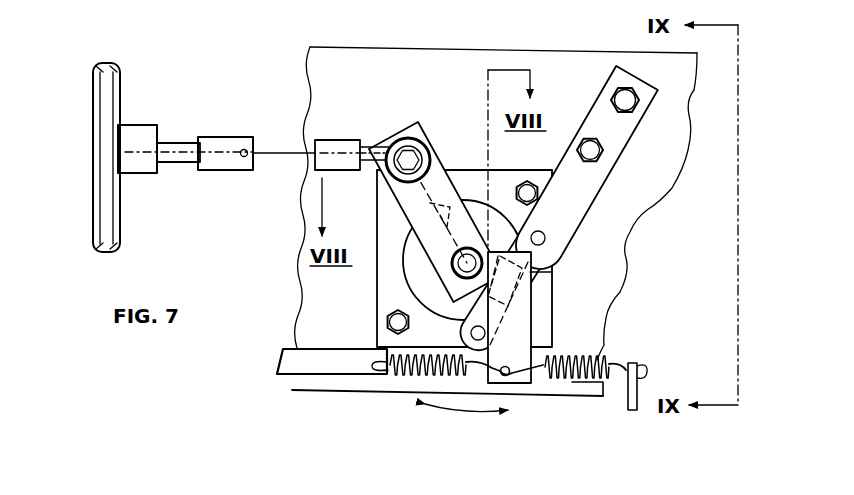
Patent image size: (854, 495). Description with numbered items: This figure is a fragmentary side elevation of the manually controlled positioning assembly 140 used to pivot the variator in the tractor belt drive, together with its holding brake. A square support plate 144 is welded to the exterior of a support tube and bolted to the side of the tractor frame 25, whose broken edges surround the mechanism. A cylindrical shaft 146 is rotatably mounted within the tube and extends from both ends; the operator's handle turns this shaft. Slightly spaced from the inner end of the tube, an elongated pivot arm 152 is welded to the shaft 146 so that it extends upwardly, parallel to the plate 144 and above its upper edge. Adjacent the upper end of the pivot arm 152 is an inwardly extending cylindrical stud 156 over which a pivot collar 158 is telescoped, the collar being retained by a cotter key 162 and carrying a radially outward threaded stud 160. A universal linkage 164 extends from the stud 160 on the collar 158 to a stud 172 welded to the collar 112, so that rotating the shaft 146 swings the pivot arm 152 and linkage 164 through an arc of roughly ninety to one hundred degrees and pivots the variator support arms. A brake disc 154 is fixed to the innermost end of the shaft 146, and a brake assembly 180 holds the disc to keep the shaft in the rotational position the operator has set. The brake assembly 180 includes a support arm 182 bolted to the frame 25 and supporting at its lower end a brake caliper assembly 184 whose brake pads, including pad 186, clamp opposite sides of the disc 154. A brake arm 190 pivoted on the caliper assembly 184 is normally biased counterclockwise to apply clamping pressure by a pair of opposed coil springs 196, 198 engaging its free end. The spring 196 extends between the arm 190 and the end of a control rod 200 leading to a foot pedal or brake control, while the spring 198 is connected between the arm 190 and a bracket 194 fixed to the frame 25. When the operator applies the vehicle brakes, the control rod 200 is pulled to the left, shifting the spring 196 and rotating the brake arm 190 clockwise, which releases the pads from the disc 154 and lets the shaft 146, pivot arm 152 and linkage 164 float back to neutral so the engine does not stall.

The tractor frame 25 is at (640, 217).
The collar 112 is at (112, 150).
The positioning assembly 140 is at (436, 70).
The square support plate 144 is at (470, 183).
The cylindrical shaft 146 is at (460, 263).
The pivot arm 152 is at (417, 203).
The brake disc 154 is at (498, 208).
The cylindrical stud 156 is at (410, 157).
The pivot collar 158 is at (400, 137).
The threaded stud 160 is at (372, 140).
The cotter key 162 is at (387, 180).
The universal linkage 164 is at (241, 130).
The stud 172 is at (177, 140).
The brake assembly 180 is at (570, 291).
The support arm 182 is at (587, 177).
The brake caliper assembly 184 is at (560, 260).
The brake pad 186 is at (553, 318).
The brake arm 190 is at (518, 384).
The bracket 194 is at (640, 392).
The coil spring 196 is at (403, 380).
The coil spring 198 is at (572, 386).
The control rod 200 is at (282, 362).